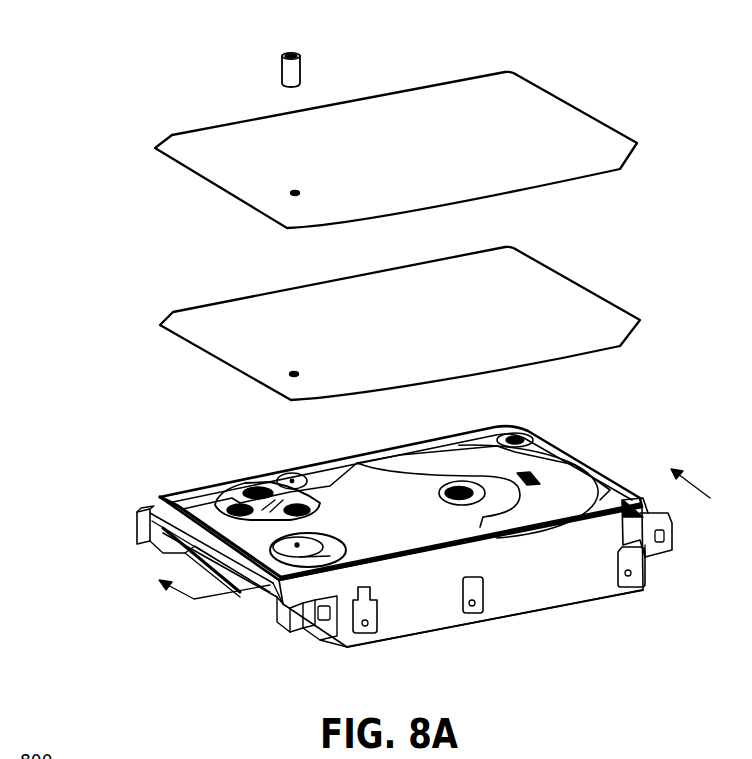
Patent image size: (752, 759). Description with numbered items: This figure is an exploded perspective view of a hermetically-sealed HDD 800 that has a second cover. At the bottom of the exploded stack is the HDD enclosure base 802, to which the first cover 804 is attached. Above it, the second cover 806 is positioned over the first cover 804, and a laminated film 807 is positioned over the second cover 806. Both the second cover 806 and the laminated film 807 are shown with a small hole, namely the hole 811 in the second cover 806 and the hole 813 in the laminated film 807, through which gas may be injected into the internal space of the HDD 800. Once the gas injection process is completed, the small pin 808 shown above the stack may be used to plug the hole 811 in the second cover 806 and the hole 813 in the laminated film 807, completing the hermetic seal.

The hermetically-sealed HDD 800 is at (118, 228).
The HDD enclosure base 802 is at (590, 568).
The first cover 804 is at (563, 475).
The second cover 806 is at (627, 326).
The laminated film 807 is at (571, 122).
The small pin 808 is at (296, 68).
The hole 811 is at (298, 373).
The hole 813 is at (300, 192).